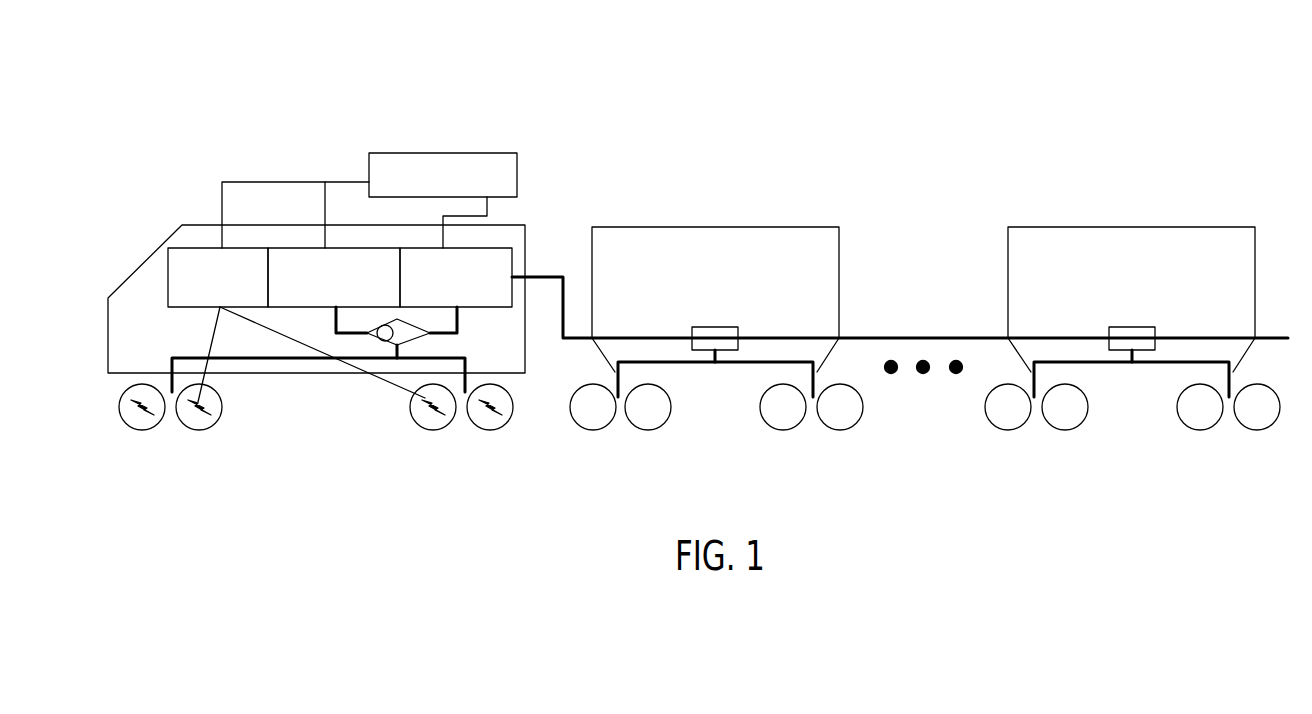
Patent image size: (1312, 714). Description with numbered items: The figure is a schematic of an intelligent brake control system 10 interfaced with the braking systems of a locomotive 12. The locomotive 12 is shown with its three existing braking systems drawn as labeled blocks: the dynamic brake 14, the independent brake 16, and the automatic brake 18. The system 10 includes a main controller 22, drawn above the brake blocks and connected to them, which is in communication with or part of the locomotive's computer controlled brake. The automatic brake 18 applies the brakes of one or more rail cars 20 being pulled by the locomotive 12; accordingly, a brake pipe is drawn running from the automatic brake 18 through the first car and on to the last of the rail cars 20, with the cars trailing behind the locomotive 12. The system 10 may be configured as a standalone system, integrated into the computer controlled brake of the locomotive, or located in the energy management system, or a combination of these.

The intelligent brake control system 10 is at (1112, 102).
The locomotive 12 is at (144, 263).
The dynamic brake 14 is at (168, 296).
The independent brake 16 is at (273, 252).
The automatic brake 18 is at (493, 300).
The rail cars 20 is at (818, 227).
The main controller 22 is at (444, 152).